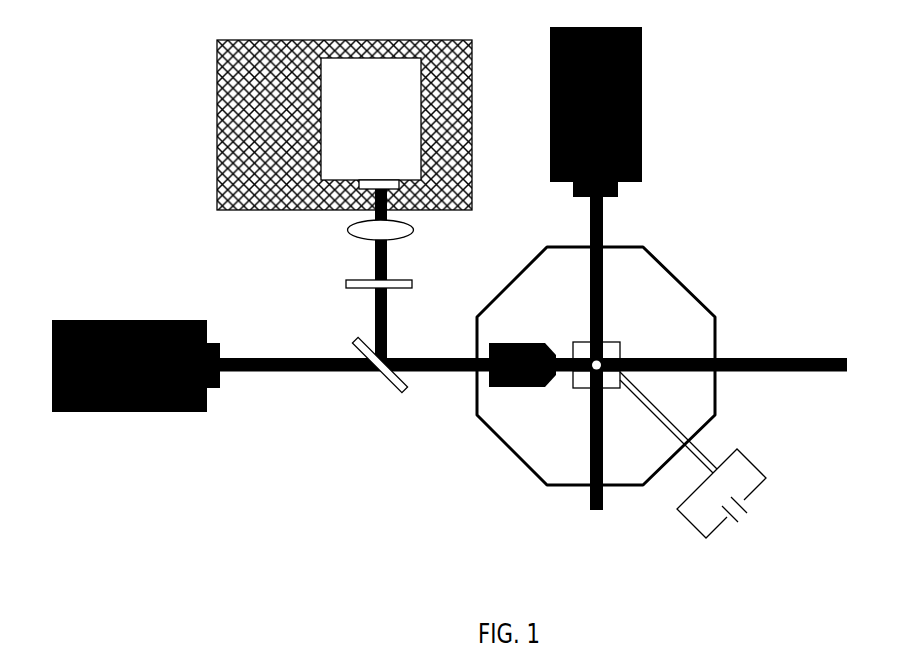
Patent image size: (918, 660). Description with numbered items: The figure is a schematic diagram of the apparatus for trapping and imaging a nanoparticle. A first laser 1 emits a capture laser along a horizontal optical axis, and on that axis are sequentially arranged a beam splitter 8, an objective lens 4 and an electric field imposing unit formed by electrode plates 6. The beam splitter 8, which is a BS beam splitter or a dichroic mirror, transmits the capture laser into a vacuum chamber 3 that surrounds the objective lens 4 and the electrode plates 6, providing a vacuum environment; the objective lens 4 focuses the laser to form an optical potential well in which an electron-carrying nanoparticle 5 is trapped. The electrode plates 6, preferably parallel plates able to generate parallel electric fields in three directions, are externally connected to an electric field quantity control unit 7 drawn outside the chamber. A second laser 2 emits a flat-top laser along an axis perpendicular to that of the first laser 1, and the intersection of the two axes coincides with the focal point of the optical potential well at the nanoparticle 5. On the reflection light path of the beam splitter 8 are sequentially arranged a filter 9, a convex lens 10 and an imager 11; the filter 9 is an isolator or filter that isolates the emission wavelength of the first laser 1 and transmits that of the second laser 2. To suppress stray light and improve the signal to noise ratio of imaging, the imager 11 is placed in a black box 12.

The first laser 1 is at (127, 418).
The second laser 2 is at (543, 93).
The vacuum chamber 3 is at (543, 235).
The objective lens 4 is at (518, 342).
The nanoparticle 5 is at (578, 373).
The electrode plate 6 is at (620, 342).
The electric field quantity control unit 7 is at (757, 458).
The beam splitter 8 is at (380, 383).
The filter 9 is at (335, 282).
The convex lens 10 is at (330, 232).
The imager 11 is at (310, 145).
The black box 12 is at (212, 205).